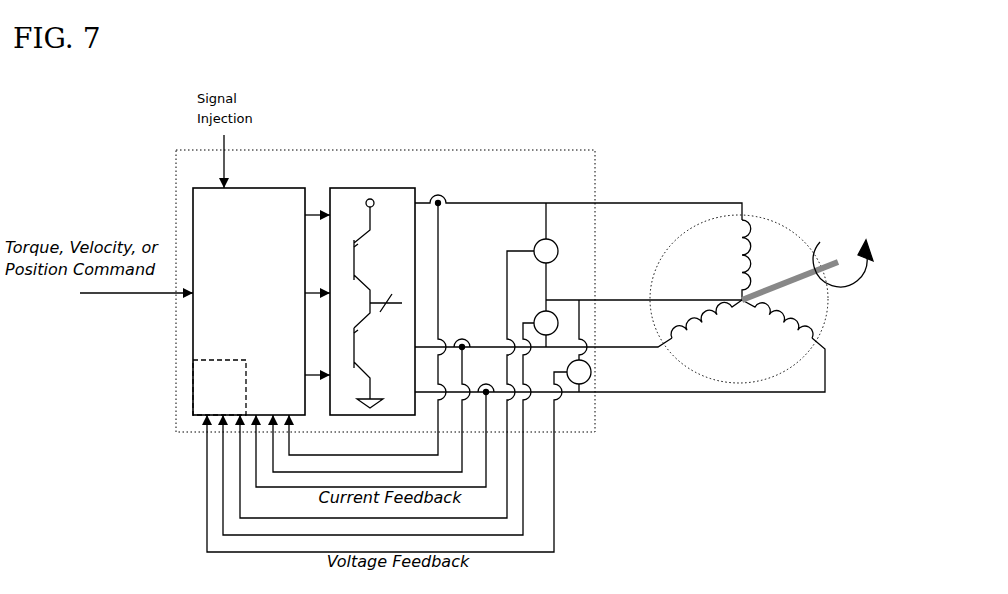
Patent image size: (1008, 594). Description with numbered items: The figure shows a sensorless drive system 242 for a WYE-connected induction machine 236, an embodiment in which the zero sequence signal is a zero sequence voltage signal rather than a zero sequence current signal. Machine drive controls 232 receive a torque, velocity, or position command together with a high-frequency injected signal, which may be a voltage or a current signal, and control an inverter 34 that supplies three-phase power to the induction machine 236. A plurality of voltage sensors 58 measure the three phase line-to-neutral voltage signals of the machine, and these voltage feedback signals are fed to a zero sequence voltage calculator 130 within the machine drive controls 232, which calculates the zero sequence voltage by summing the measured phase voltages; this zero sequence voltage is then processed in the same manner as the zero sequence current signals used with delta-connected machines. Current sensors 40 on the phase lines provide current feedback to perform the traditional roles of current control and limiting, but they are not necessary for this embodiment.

The machine drive controls 232 is at (264, 231).
The inverter 34 is at (388, 260).
The drive system 242 is at (525, 190).
The voltage sensors 58 is at (537, 243).
The current sensors 40 is at (462, 345).
The WYE-connected induction machine 236 is at (753, 218).
The zero sequence voltage calculator 130 is at (224, 411).